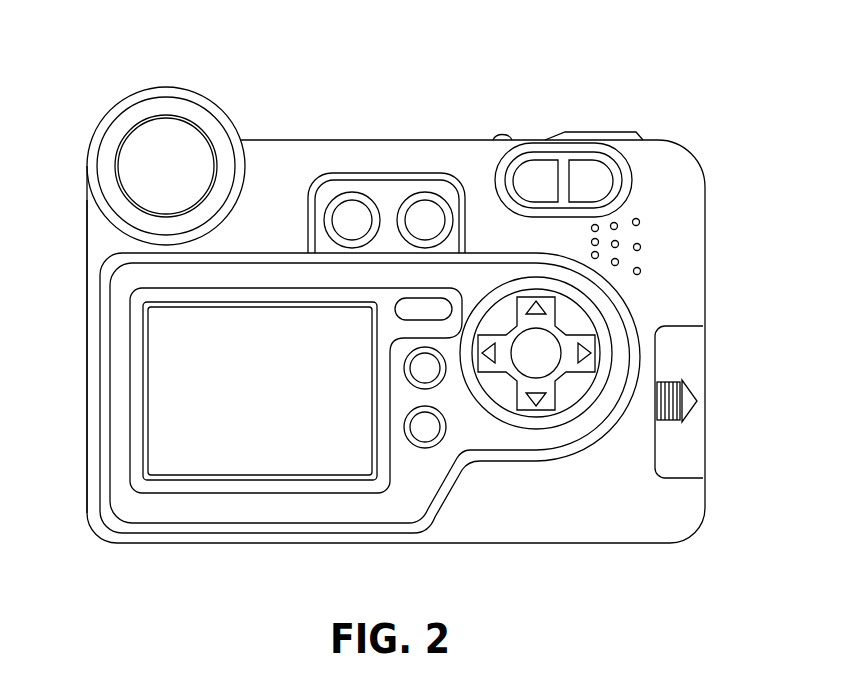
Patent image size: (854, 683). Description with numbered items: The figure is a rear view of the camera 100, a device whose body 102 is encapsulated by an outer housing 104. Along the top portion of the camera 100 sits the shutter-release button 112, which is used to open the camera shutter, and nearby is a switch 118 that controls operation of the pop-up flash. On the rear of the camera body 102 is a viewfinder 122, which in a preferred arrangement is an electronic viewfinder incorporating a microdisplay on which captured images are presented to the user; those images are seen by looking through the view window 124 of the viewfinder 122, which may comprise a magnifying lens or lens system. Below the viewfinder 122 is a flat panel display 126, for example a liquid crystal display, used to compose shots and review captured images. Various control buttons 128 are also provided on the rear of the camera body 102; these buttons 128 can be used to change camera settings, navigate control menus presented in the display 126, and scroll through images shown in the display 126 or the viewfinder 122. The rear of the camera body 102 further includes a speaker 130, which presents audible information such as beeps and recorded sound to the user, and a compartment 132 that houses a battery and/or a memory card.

The camera 100 is at (434, 271).
The body 102 is at (714, 161).
The outer housing 104 is at (86, 237).
The shutter-release button 112 is at (590, 131).
The switch 118 is at (504, 131).
The viewfinder 122 is at (229, 85).
The view window 124 is at (132, 163).
The flat panel display 126 is at (241, 399).
The control buttons 128 is at (479, 159).
The speaker 130 is at (660, 222).
The compartment 132 is at (695, 357).